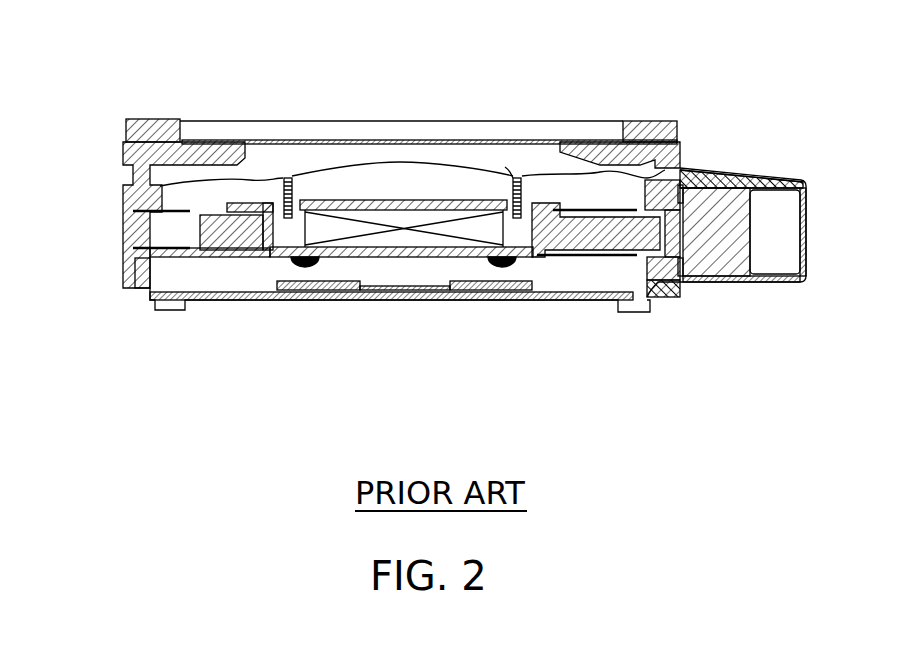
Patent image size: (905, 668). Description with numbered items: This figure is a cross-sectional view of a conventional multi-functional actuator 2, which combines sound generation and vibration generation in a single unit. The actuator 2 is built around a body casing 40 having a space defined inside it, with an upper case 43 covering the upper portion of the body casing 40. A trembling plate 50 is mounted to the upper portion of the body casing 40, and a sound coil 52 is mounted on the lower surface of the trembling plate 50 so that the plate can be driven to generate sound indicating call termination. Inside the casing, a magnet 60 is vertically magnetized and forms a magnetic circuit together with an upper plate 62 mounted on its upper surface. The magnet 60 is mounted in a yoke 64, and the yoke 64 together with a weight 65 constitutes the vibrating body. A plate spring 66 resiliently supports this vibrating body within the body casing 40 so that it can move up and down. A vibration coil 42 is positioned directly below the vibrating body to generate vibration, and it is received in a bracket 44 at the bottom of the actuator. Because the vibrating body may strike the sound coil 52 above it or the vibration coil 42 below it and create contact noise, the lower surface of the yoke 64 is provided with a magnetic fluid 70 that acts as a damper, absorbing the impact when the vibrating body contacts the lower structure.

The actuator 2 is at (762, 136).
The body casing 40 is at (135, 192).
The vibration coil 42 is at (313, 291).
The upper case 43 is at (147, 120).
The bracket 44 is at (227, 298).
The trembling plate 50 is at (483, 141).
The sound coil 52 is at (527, 207).
The magnet 60 is at (383, 222).
The upper plate 62 is at (335, 205).
The yoke 64 is at (410, 245).
The weight 65 is at (220, 230).
The plate spring 66 is at (165, 247).
The magnetic fluid 70 is at (503, 265).